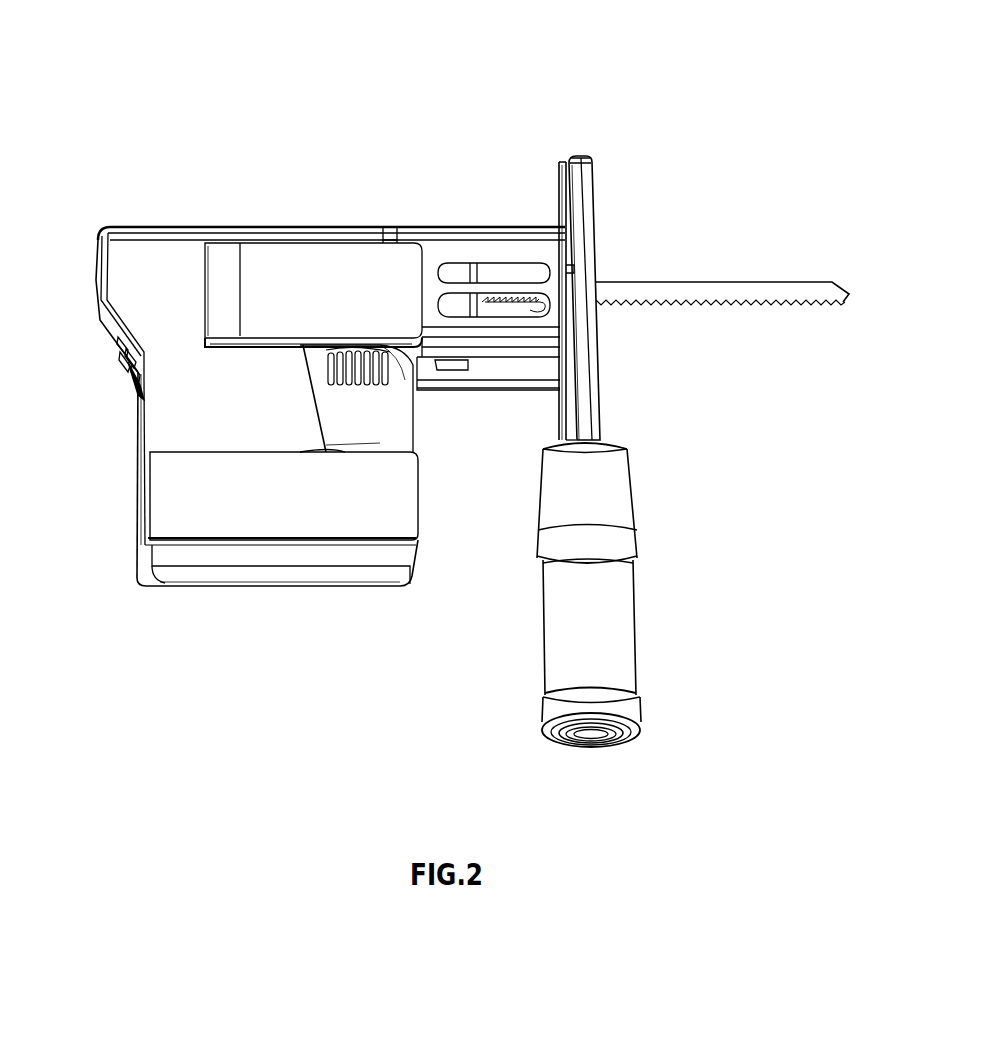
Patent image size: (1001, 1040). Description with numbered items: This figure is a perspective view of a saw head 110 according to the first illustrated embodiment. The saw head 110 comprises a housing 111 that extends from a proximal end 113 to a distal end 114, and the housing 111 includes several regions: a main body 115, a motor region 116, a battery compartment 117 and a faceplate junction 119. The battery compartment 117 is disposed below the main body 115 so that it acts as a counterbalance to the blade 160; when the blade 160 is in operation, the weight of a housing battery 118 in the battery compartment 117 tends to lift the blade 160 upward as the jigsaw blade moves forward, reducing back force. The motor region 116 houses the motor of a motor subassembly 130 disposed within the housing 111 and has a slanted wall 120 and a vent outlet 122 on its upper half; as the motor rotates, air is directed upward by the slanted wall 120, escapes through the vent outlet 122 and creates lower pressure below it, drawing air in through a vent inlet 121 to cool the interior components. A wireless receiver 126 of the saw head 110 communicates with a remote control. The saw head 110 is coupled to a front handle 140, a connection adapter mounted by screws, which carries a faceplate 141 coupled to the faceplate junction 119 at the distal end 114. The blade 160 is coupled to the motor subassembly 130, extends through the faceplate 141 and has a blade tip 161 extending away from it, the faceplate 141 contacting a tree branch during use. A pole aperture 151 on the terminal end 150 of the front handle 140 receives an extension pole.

The saw head 110 is at (119, 50).
The housing 111 is at (150, 227).
The proximal end 113 is at (135, 522).
The distal end 114 is at (553, 226).
The main body 115 is at (115, 242).
The motor region 116 is at (368, 440).
The battery compartment 117 is at (185, 565).
The housing battery 118 is at (258, 586).
The faceplate junction 119 is at (435, 227).
The slanted wall 120 is at (315, 415).
The vent inlet 121 is at (120, 362).
The vent outlet 122 is at (378, 378).
The wireless receiver 126 is at (168, 410).
The motor subassembly 130 is at (300, 268).
The front handle 140 is at (595, 362).
The faceplate 141 is at (580, 162).
The terminal end 150 is at (635, 632).
The pole aperture 151 is at (590, 746).
The blade 160 is at (738, 282).
The blade tip 161 is at (835, 305).